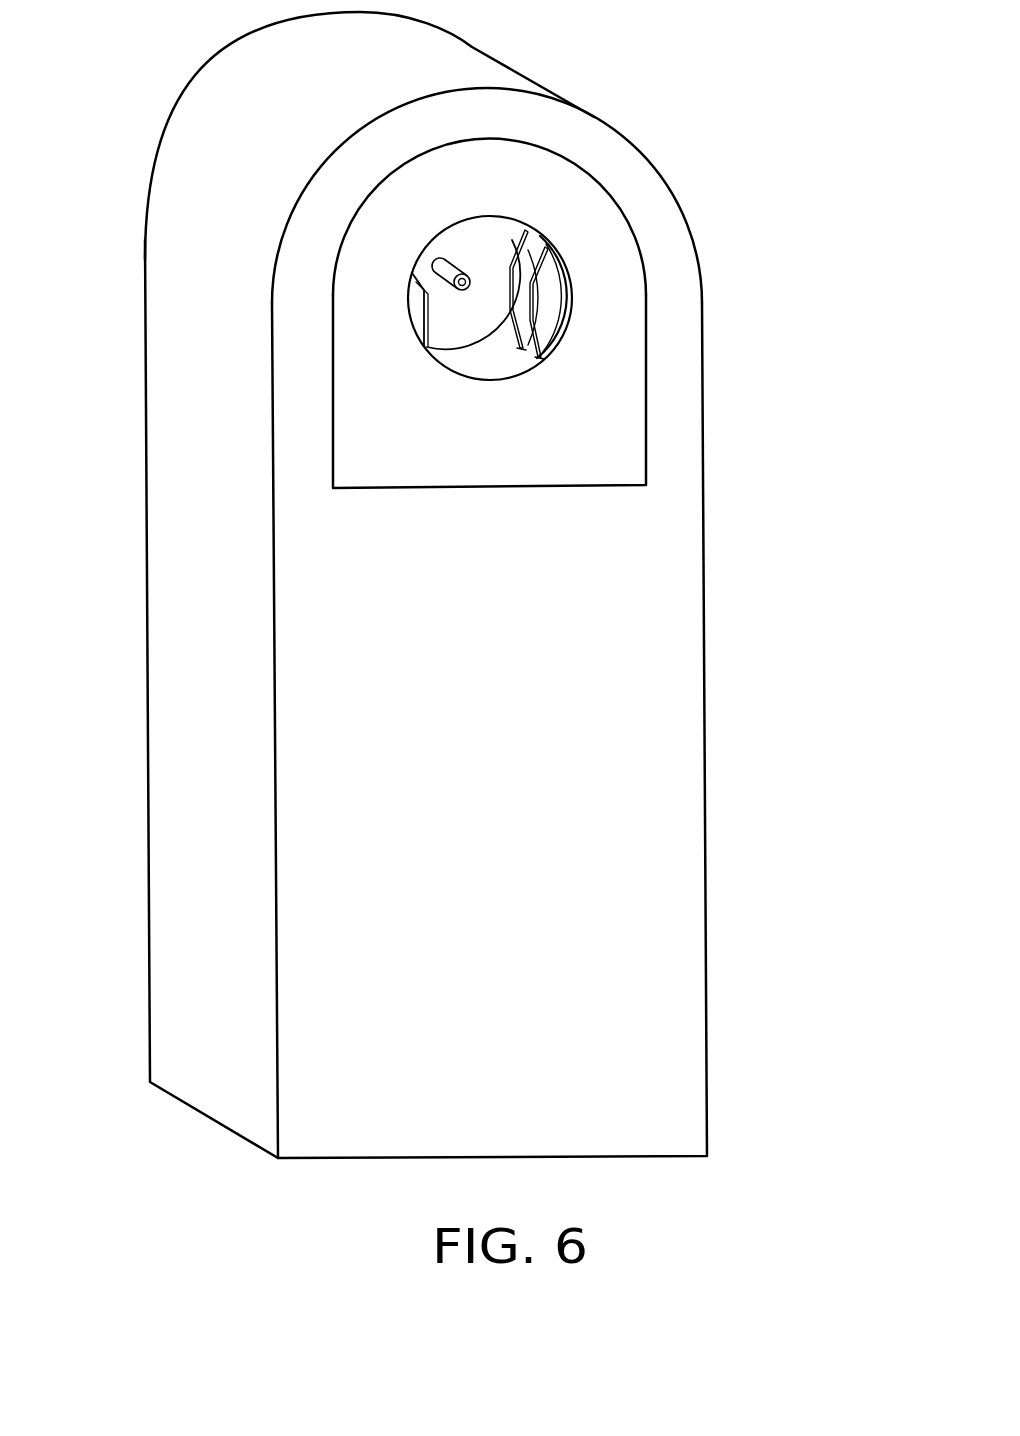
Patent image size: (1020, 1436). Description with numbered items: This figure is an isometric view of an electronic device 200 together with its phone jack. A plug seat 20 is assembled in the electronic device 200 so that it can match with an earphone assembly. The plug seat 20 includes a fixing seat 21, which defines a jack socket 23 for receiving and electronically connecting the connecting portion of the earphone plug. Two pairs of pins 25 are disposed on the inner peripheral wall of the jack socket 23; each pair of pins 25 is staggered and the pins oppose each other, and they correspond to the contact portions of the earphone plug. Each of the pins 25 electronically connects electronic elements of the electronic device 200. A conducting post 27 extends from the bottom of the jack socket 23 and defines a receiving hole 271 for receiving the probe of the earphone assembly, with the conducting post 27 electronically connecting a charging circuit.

The electronic device 200 is at (668, 602).
The fixing seat 21 is at (343, 238).
The plug seat 20 is at (617, 448).
The jack socket 23 is at (478, 318).
The conducting post 27 is at (452, 268).
The receiving hole 271 is at (533, 228).
The pins 25 is at (530, 295).